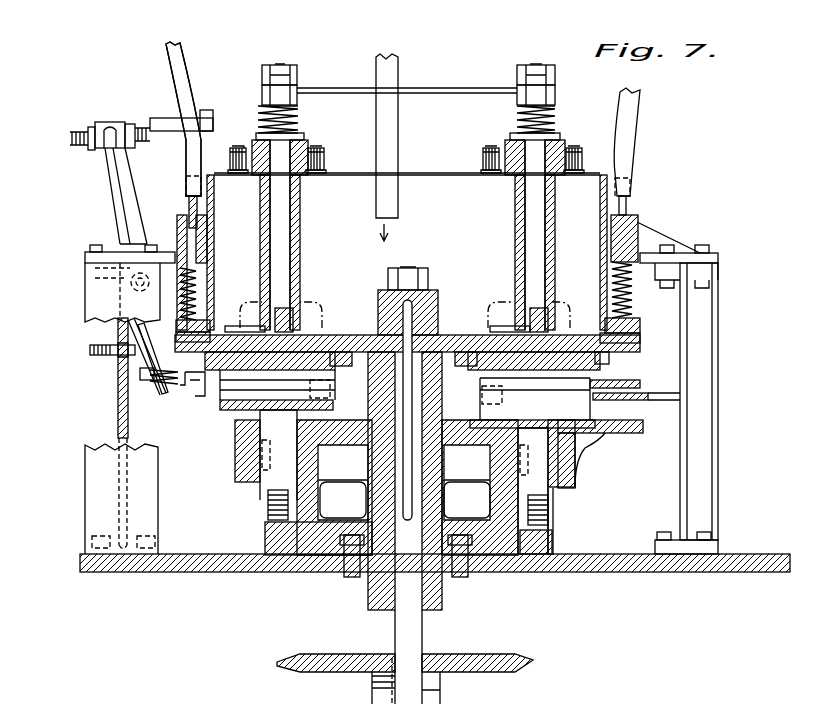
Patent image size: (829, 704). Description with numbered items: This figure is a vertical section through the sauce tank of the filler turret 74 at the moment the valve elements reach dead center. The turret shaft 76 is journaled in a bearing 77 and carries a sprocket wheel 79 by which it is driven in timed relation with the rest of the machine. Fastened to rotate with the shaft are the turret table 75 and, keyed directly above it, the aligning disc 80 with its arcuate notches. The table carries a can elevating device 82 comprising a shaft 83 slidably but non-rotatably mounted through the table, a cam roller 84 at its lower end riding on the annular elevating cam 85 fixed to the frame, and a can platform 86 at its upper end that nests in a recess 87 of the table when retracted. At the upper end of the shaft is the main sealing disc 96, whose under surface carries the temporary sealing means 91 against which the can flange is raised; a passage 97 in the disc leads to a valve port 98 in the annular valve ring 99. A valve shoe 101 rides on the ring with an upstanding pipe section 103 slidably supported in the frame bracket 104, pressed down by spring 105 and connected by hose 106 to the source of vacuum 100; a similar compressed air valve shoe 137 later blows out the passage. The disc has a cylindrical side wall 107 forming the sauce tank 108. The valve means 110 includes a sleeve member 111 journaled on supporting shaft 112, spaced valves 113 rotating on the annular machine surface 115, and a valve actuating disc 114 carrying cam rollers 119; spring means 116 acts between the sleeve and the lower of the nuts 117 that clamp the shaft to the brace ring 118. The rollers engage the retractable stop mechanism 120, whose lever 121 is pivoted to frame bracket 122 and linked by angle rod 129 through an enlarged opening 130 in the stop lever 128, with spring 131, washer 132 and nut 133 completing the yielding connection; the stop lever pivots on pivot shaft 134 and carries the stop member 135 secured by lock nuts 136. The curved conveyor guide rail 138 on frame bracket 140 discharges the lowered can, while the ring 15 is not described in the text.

The source of vacuum 100 is at (165, 27).
The hose 106 is at (184, 74).
The nuts 117 is at (262, 97).
The brace ring 118 is at (480, 88).
The lock nuts 136 is at (127, 122).
The retractable stop mechanism 120 is at (113, 114).
The stop member 135 is at (163, 120).
The spring means 116 is at (300, 118).
The actuating cam rollers 119 is at (326, 158).
The sauce tank 108 is at (449, 185).
The stop lever 128 is at (112, 200).
The frame bracket 104 is at (155, 233).
The cylindrical side wall 107 is at (214, 196).
The supporting shaft 112 is at (288, 228).
The sleeve member 111 is at (300, 250).
The valve actuating disc 114 is at (303, 175).
The valve means 110 is at (564, 292).
The spring 105 is at (200, 290).
The pipe section 103 is at (208, 322).
The passage 97 is at (282, 322).
The sealing disc 96 is at (440, 330).
The valves 113 is at (325, 330).
The annular machine surface 115 is at (338, 345).
The pivot shaft 134 is at (110, 287).
The valve shoe 101 is at (175, 318).
The valve port 98 is at (180, 332).
The annular valve ring 99 is at (642, 328).
The compressed air valve shoe 137 is at (634, 322).
The curved conveyor guide rail 138 is at (640, 386).
The spring 131 is at (125, 356).
The angle rod 129 is at (226, 377).
The temporary sealing means 91 is at (346, 362).
The nut 133 is at (150, 378).
The enlarged opening 130 is at (118, 410).
The washer 132 is at (165, 397).
The recess 87 is at (505, 425).
The can platform 86 is at (568, 420).
The ring 15 is at (305, 418).
The lever 121 is at (200, 396).
The frame bracket 122 is at (85, 460).
The aligning disc 80 is at (472, 428).
The filler turret 74 is at (634, 436).
The turret table 75 is at (620, 436).
The frame bracket 140 is at (718, 460).
The shaft 83 is at (518, 494).
The can elevating device 82 is at (565, 497).
The cam roller 84 is at (550, 516).
The elevating cam 85 is at (555, 550).
The bearing 77 is at (437, 610).
The turret shaft 76 is at (424, 640).
The sprocket wheel 79 is at (500, 672).